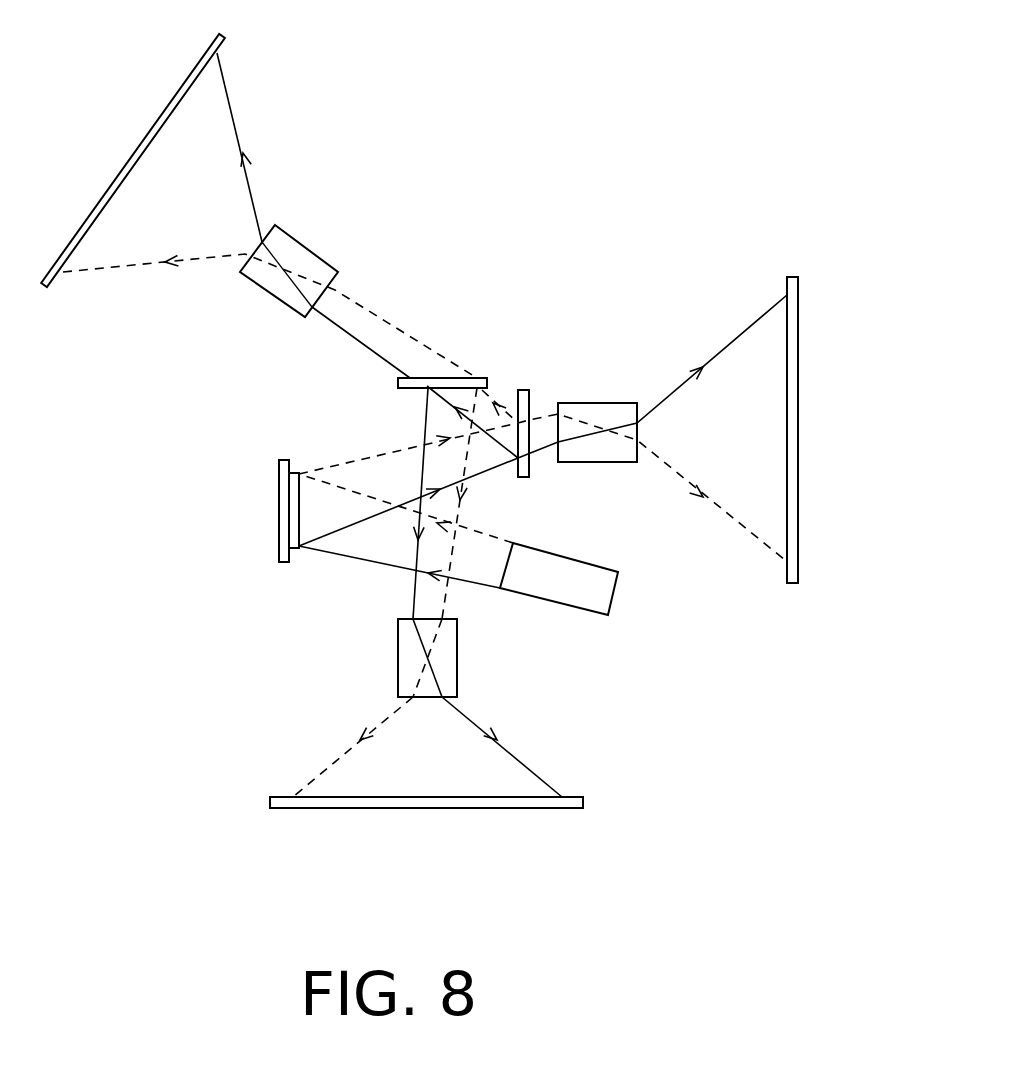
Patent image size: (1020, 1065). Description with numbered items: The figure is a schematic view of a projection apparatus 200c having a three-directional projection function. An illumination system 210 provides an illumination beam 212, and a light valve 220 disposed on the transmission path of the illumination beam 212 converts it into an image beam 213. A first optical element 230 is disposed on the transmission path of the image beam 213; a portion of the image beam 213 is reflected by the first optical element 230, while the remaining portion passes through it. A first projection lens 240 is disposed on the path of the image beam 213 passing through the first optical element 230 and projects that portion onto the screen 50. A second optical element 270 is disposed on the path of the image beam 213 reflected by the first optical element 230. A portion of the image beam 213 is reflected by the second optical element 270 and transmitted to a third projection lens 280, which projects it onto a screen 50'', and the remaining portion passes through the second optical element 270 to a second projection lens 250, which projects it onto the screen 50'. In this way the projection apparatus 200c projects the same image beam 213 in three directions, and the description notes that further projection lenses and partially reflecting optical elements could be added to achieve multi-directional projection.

The projection apparatus 200c is at (652, 207).
The screen 50 is at (846, 430).
The screen 50' is at (133, 160).
The screen 50'' is at (426, 843).
The illumination system 210 is at (588, 583).
The illumination beam 212 is at (487, 523).
The image beam 213 is at (377, 438).
The light valve 220 is at (282, 505).
The first optical element 230 is at (525, 392).
The first projection lens 240 is at (612, 417).
The second projection lens 250 is at (305, 262).
The second optical element 270 is at (477, 385).
The third projection lens 280 is at (412, 663).